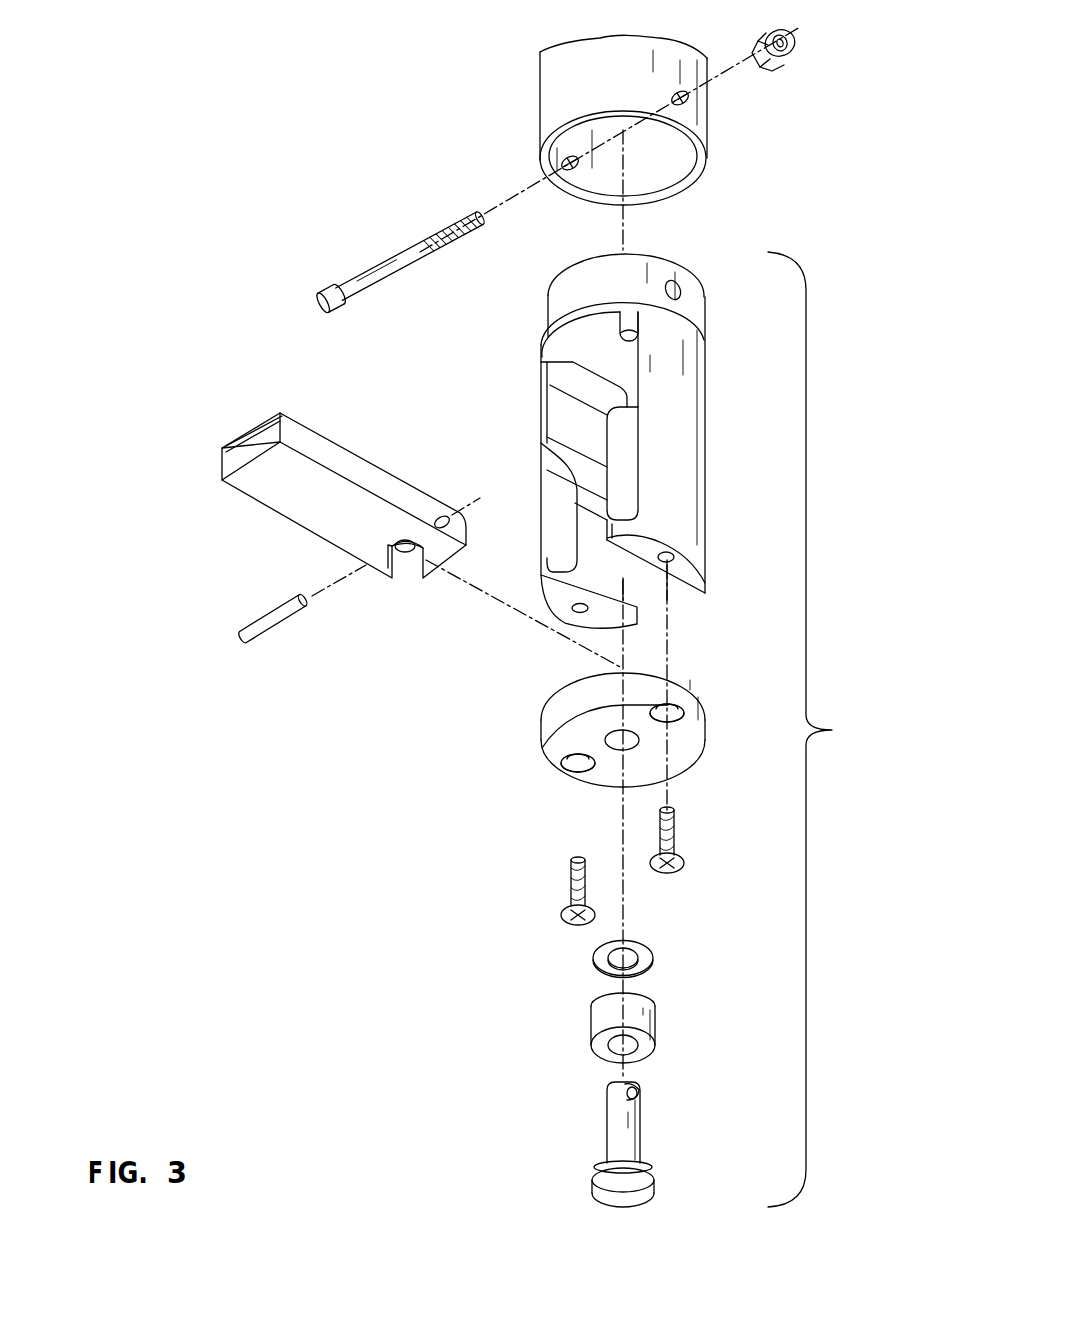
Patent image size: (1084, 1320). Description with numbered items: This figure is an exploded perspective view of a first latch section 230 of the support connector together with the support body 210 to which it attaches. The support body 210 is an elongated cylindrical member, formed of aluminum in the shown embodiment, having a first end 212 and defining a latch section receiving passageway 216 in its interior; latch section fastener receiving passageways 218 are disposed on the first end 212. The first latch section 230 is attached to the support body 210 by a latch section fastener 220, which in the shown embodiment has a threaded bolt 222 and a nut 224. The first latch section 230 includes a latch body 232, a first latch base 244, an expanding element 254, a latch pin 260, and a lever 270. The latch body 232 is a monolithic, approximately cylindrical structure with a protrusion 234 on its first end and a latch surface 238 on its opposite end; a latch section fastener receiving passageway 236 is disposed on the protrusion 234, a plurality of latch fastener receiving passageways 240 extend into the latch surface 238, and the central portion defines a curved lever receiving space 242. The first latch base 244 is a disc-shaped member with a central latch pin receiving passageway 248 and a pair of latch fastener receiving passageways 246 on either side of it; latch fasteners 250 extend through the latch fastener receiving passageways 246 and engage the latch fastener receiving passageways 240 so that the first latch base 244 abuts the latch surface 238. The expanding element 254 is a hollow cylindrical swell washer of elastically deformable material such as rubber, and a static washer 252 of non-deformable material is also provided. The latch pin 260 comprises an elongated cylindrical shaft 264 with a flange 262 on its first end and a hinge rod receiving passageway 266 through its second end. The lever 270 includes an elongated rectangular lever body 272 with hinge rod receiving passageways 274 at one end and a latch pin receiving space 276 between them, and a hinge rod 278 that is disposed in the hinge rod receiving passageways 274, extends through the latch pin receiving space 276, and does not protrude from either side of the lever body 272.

The support body 210 is at (548, 66).
The first end 212 is at (543, 158).
The latch section receiving passageway 216 is at (671, 150).
The latch section fastener receiving passageways 218 is at (690, 105).
The latch section fastener 220 is at (400, 258).
The threaded bolt 222 is at (378, 284).
The nut 224 is at (795, 64).
The first latch section 230 is at (679, 740).
The latch body 232 is at (615, 455).
The protrusion 234 is at (547, 292).
The latch section fastener receiving passageway 236 is at (686, 292).
The latch surface 238 is at (548, 597).
The latch fastener receiving passageways 240 is at (668, 566).
The lever receiving space 242 is at (622, 478).
The first latch base 244 is at (577, 759).
The latch fastener receiving passageways 246 is at (561, 763).
The latch pin receiving passageway 248 is at (618, 760).
The latch fasteners 250 is at (655, 824).
The static washer 252 is at (593, 958).
The expanding element 254 is at (591, 1022).
The latch pin 260 is at (608, 1144).
The flange 262 is at (596, 1188).
The shaft 264 is at (637, 1136).
The hinge rod receiving passageway 266 is at (637, 1090).
The lever 270 is at (293, 532).
The lever body 272 is at (302, 440).
The hinge rod receiving passageways 274 is at (444, 515).
The latch pin receiving space 276 is at (430, 560).
The hinge rod 278 is at (270, 632).